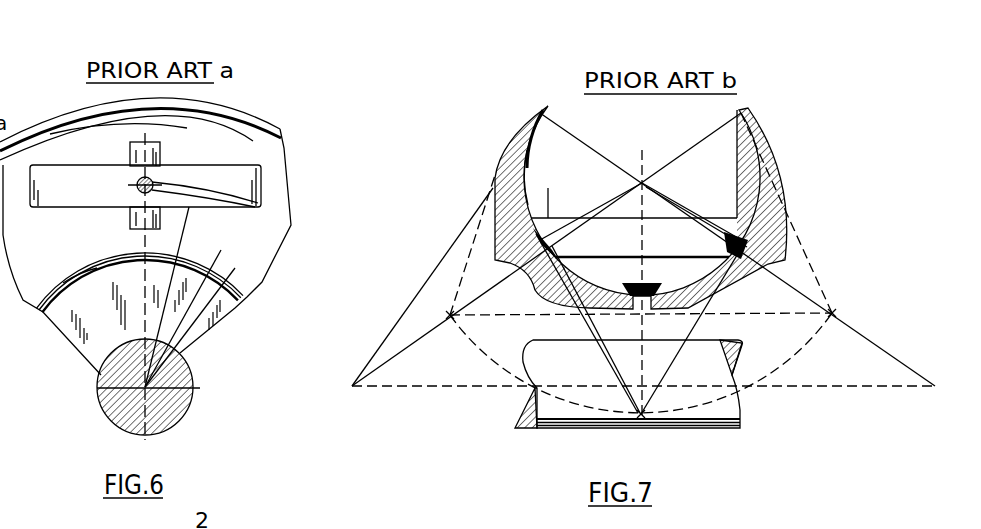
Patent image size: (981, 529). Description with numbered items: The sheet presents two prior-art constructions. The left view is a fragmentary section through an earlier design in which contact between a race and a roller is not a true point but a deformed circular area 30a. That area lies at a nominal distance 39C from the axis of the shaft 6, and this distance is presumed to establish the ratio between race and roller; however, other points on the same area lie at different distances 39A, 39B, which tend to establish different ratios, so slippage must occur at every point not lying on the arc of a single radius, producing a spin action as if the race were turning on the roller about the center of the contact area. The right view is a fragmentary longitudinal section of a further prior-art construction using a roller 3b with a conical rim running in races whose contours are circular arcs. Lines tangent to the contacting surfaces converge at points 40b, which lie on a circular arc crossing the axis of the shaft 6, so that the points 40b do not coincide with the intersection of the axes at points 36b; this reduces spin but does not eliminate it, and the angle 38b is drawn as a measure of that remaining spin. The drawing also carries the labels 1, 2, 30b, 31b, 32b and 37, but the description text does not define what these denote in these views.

In FIG. 6, the lens 1 is at (82, 108).
In FIG. 7, the lens 1 is at (532, 141).
In FIG. 7, the housing 2 is at (749, 112).
In FIG. 7, the reflector 3b is at (563, 133).
In FIG. 6, the base socket 6 is at (192, 383).
In FIG. 7, the base socket 6 is at (562, 432).
In FIG. 6, the light source 30a is at (138, 192).
In FIG. 7, the light source image points 30b is at (538, 112).
In FIG. 7, the lens inner surface 31b is at (523, 163).
In FIG. 7, the lens outer surface 32b is at (738, 124).
In FIG. 7, the focal points 36b is at (360, 393).
In FIG. 7, the optical center 37 is at (645, 181).
In FIG. 7, the light rays 38b is at (437, 266).
In FIG. 6, the inner arc 39A is at (205, 210).
In FIG. 6, the lower arc 39B is at (268, 224).
In FIG. 6, the outer edge arc 39C is at (242, 208).
In FIG. 7, the centers of curvature 40b is at (847, 314).